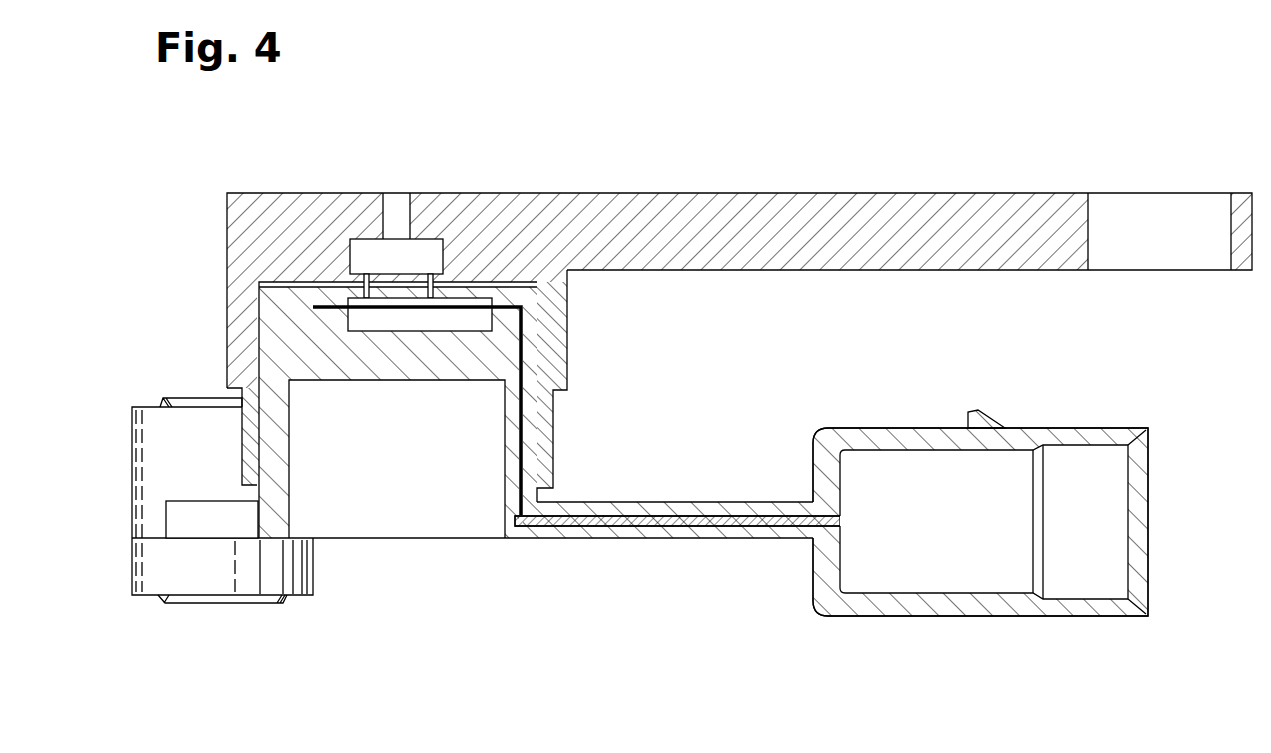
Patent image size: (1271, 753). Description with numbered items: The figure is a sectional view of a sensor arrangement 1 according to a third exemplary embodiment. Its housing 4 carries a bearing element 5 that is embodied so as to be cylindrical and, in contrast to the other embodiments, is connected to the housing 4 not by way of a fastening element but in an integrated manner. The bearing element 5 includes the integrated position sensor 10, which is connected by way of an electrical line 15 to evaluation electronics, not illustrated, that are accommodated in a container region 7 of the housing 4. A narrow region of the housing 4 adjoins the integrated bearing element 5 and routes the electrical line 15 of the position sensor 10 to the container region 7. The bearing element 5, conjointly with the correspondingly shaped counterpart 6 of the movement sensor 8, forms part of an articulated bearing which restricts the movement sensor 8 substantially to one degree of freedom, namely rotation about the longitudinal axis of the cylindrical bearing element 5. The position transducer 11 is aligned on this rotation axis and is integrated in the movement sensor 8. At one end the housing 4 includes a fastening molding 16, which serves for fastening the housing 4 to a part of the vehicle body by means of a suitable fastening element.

The sensor arrangement 1 is at (191, 233).
The housing 4 is at (573, 537).
The bearing element 5 is at (270, 342).
The counterpart 6 is at (553, 342).
The container region 7 is at (971, 604).
The movement sensor 8 is at (877, 222).
The position sensor 10 is at (402, 322).
The position transducer 11 is at (365, 250).
The electrical line 15 is at (707, 521).
The fastening molding 16 is at (157, 555).